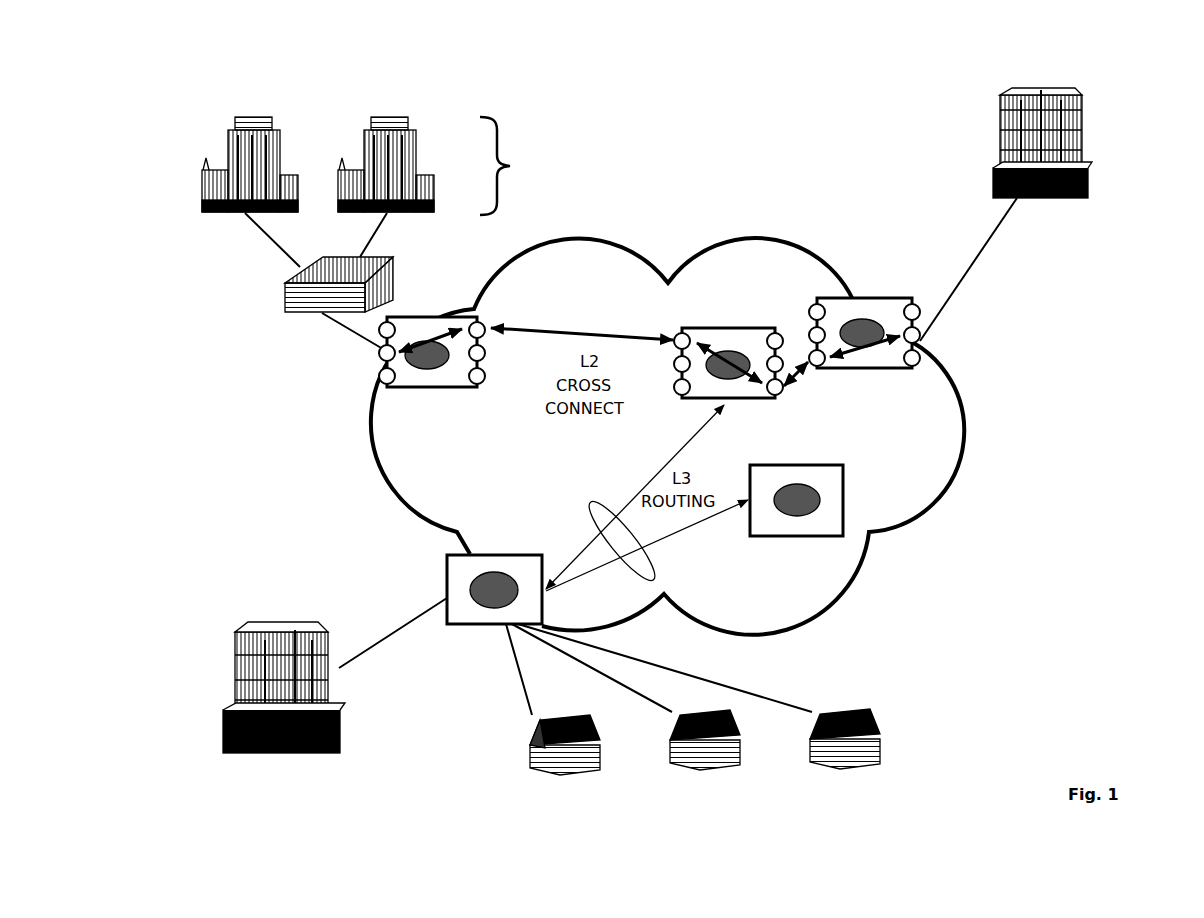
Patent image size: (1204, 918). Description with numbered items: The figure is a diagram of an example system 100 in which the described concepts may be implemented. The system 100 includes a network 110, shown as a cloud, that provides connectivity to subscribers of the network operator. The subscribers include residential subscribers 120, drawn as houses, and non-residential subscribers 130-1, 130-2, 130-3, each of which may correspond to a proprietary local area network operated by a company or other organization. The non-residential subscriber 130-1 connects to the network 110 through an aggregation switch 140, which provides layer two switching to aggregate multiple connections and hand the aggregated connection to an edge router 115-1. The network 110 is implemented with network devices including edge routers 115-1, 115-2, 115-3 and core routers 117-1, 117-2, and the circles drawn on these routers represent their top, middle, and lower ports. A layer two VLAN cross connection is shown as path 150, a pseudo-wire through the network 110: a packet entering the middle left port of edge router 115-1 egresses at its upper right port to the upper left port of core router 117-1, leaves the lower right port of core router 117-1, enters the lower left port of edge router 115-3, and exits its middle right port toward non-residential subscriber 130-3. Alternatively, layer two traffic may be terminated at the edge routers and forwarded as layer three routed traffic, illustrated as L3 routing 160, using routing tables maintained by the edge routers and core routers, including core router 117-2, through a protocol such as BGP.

The system 100 is at (1180, 120).
The network 110 is at (757, 239).
The edge router 115-1 is at (428, 389).
The edge router 115-2 is at (446, 561).
The edge router 115-3 is at (886, 298).
The core router 117-1 is at (740, 328).
The core router 117-2 is at (848, 465).
The residential subscribers 120 is at (570, 787).
The non-residential subscriber 130-1 is at (395, 166).
The non-residential subscriber 130-2 is at (281, 616).
The non-residential subscriber 130-3 is at (1090, 86).
The aggregation switch 140 is at (395, 262).
The path 150 is at (575, 328).
The L3 routing 160 is at (590, 502).